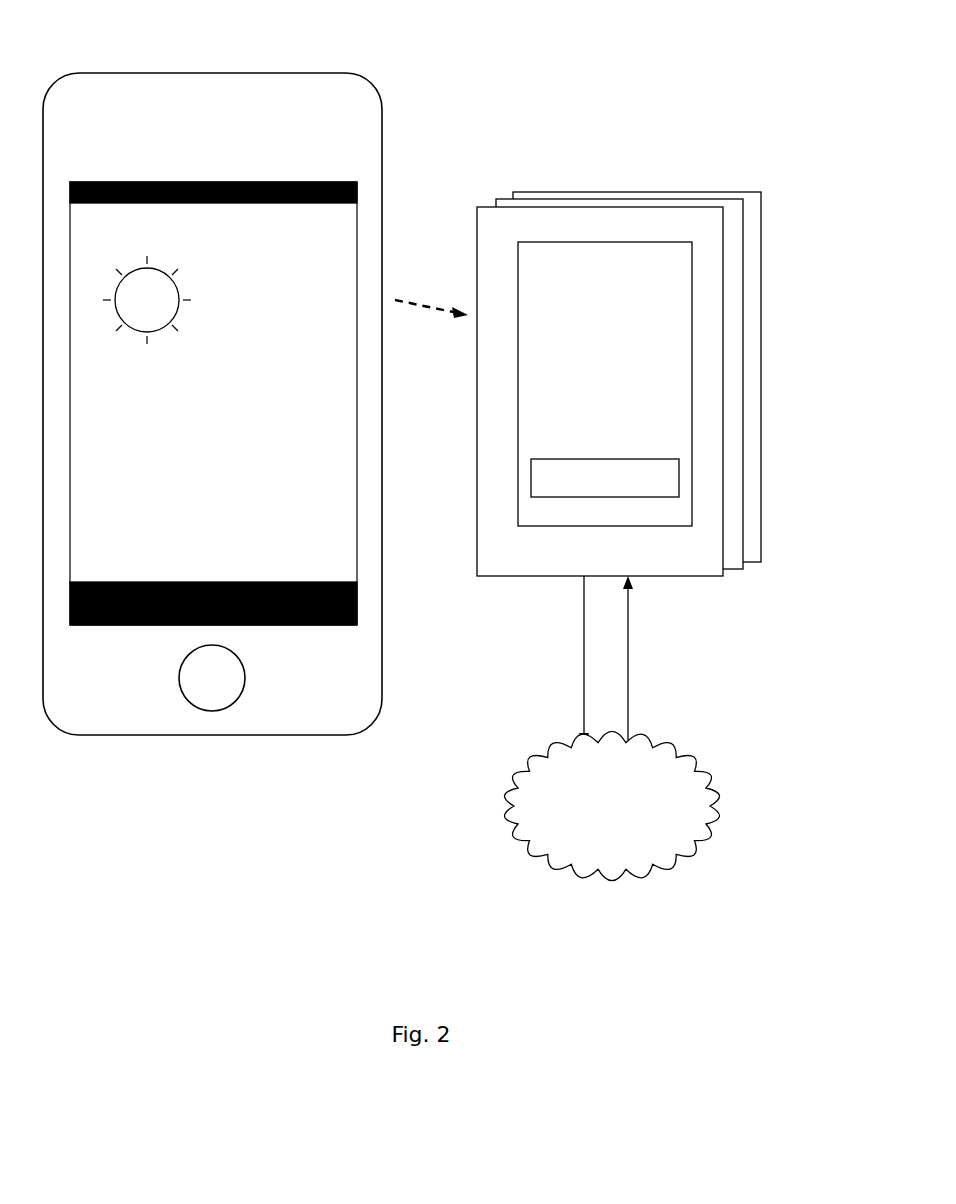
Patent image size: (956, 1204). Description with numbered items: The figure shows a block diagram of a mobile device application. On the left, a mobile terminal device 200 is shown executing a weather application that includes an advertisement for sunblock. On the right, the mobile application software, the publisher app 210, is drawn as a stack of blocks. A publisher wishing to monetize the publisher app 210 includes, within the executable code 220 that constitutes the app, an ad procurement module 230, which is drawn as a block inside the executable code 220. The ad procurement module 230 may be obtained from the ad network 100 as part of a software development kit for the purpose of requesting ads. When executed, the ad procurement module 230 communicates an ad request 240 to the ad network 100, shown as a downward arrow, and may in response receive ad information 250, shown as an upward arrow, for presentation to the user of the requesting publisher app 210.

The mobile terminal device 200 is at (179, 44).
The publisher app 210 is at (576, 207).
The executable code 220 is at (663, 303).
The ad procurement module 230 is at (658, 400).
The ad request 240 is at (567, 661).
The ad information 250 is at (647, 658).
The ad network 100 is at (707, 783).